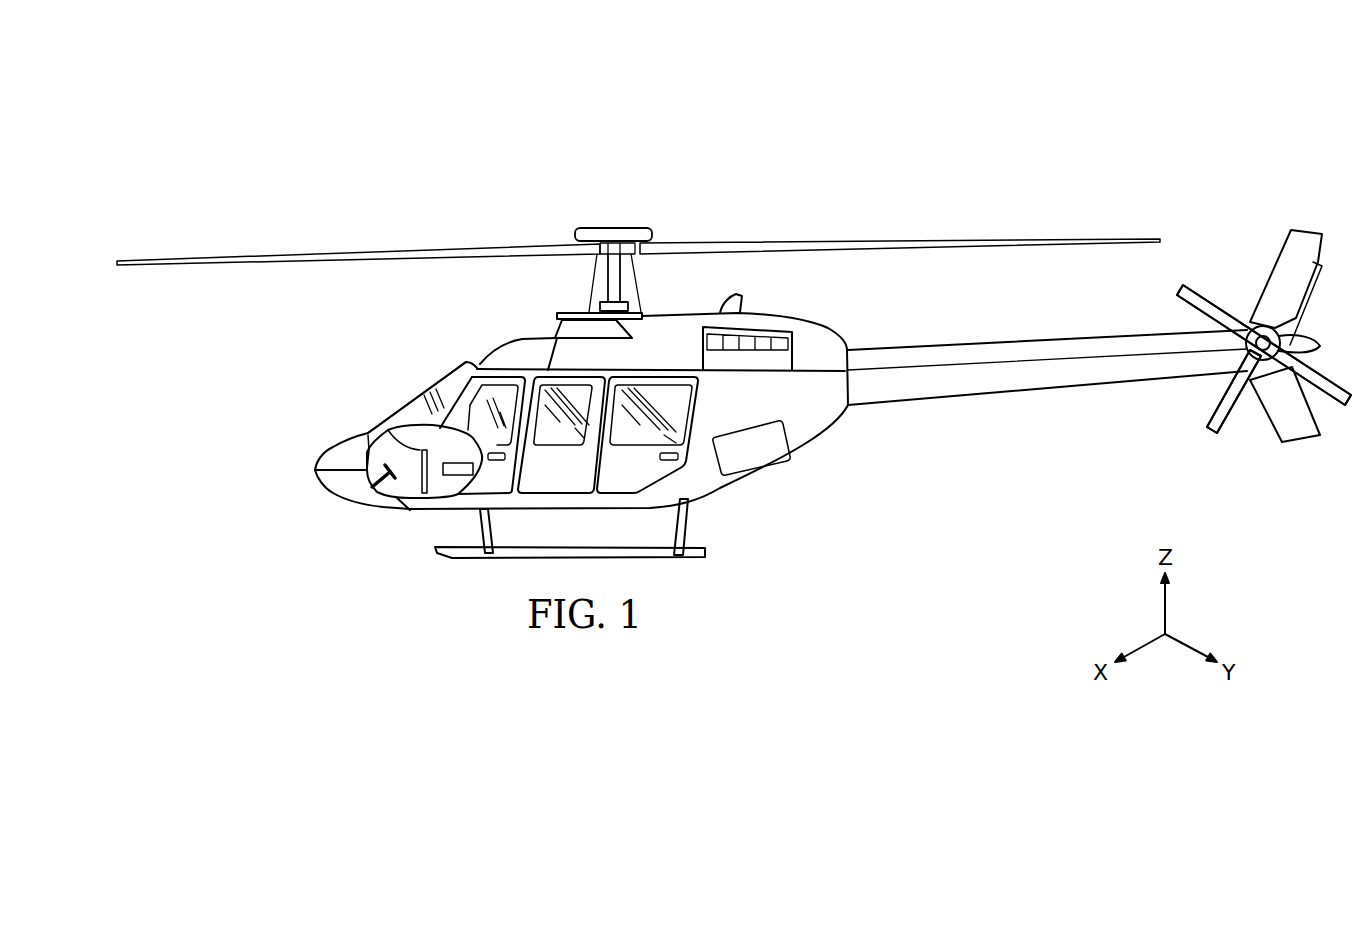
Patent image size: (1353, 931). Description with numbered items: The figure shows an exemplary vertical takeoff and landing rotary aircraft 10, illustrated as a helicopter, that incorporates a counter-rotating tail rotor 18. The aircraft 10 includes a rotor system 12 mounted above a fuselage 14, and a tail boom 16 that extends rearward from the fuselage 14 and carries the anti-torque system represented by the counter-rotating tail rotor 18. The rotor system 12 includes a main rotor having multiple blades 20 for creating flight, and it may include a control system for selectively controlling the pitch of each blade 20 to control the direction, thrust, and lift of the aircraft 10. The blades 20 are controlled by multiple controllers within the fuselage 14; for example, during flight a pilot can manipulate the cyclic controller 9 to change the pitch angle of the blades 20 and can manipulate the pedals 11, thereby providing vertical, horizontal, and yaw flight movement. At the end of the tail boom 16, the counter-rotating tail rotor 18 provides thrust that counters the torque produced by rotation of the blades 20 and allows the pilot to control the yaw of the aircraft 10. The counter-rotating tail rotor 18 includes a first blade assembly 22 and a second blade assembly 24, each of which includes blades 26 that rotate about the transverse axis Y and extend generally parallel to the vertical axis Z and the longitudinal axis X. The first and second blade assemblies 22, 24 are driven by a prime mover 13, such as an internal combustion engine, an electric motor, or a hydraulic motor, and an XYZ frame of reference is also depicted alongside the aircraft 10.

The cyclic controller 9 is at (396, 432).
The aircraft 10 is at (379, 93).
The pedals 11 is at (384, 500).
The rotor system 12 is at (592, 200).
The prime mover 13 is at (684, 282).
The fuselage 14 is at (440, 377).
The tail boom 16 is at (934, 399).
The counter-rotating tail rotor 18 is at (1198, 206).
The blades 20 is at (814, 240).
The first blade assembly 22 is at (1217, 268).
The second blade assembly 24 is at (1214, 406).
The blades 26 is at (1264, 359).